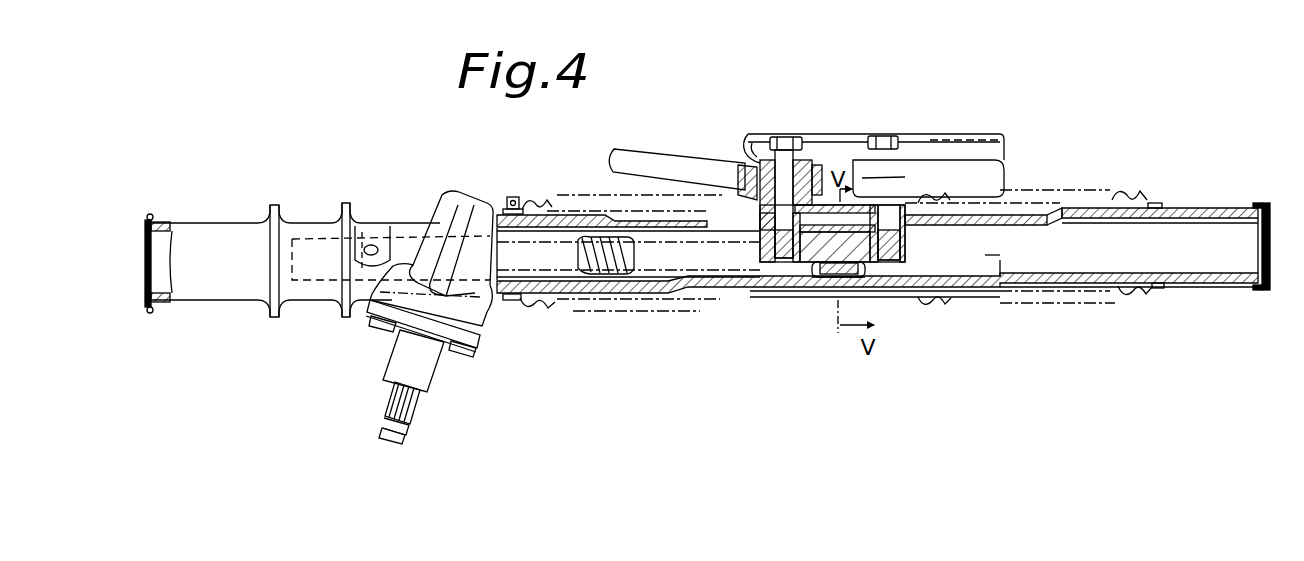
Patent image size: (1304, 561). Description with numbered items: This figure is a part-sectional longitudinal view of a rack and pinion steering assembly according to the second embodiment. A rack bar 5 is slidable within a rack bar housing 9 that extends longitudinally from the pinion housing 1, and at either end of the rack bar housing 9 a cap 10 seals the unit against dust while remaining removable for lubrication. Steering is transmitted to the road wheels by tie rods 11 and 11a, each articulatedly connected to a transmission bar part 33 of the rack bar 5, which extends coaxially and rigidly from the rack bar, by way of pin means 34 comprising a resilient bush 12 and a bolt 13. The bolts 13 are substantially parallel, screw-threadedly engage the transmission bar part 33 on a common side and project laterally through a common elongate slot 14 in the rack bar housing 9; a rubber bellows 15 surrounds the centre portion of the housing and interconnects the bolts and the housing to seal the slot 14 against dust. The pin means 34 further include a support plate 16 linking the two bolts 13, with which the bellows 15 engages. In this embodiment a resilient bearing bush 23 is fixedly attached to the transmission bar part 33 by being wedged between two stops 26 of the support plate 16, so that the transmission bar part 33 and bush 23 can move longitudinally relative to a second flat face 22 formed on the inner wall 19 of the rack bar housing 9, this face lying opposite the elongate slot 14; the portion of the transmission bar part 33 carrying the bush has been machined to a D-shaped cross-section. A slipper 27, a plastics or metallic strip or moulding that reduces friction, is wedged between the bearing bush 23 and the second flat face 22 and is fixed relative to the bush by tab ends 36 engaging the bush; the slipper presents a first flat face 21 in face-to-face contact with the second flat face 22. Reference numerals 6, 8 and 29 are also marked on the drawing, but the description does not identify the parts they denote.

The pinion housing 1 is at (480, 322).
The rack bar 5 is at (302, 245).
The rack teeth 6 is at (590, 272).
The pinion shaft 8 is at (383, 407).
The rack bar housing 9 is at (1000, 287).
The cap 10 is at (155, 248).
The tie rod 11 is at (656, 160).
The tie rod 11a is at (953, 168).
The resilient bush 12 is at (808, 165).
The bolt 13 is at (782, 158).
The elongate slot 14 is at (1046, 216).
The rubber bellows 15 is at (535, 202).
The support plate 16 is at (778, 262).
The inner wall 19 is at (1093, 274).
The first flat face 21 is at (852, 280).
The second flat face 22 is at (988, 265).
The resilient bearing bush 23 is at (900, 258).
The stops 26 is at (760, 232).
The slipper 27 is at (833, 265).
The pad 29 is at (826, 283).
The transmission bar part 33 is at (735, 262).
The pin means 34 is at (744, 152).
The tab ends 36 is at (810, 265).